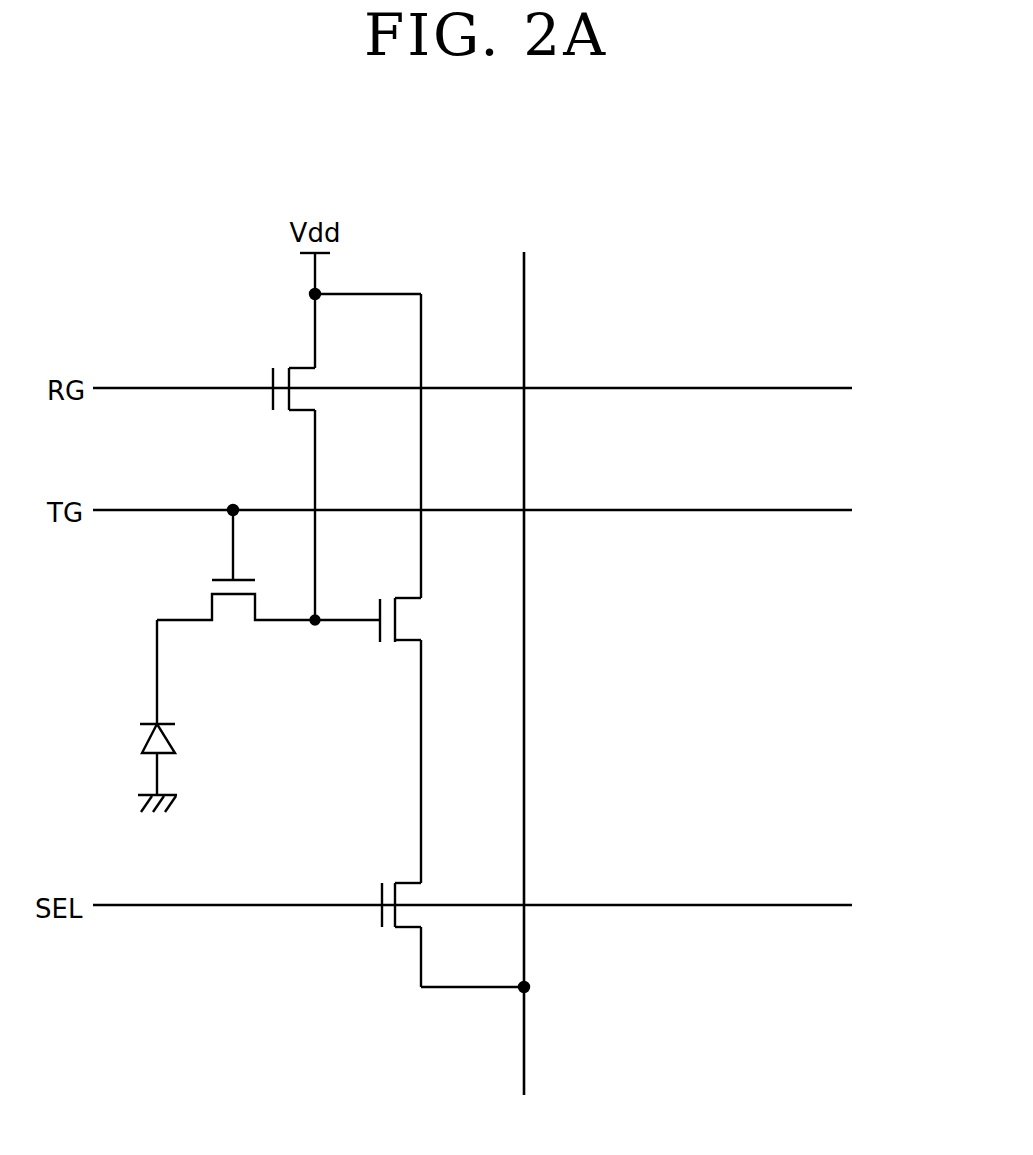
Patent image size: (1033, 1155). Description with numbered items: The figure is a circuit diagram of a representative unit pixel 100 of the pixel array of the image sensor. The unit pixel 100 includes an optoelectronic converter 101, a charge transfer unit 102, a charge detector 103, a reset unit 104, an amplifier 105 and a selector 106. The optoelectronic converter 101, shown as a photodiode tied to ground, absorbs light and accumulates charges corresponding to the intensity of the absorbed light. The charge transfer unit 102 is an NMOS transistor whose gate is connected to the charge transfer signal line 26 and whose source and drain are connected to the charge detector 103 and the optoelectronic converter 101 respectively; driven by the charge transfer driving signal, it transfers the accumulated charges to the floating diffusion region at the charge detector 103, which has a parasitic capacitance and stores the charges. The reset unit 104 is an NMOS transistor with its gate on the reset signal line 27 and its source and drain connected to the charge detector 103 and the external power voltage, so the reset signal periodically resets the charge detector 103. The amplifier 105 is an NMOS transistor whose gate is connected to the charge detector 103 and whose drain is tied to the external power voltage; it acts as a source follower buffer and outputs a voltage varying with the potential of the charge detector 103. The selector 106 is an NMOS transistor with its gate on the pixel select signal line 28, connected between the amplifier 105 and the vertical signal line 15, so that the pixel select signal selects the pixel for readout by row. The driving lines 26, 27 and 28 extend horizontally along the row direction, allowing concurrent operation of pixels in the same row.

The unit pixel 100 is at (633, 210).
The optoelectronic converter 101 is at (170, 739).
The charge transfer unit 102 is at (236, 581).
The charge detector 103 is at (315, 625).
The reset unit 104 is at (324, 383).
The amplifier 105 is at (396, 620).
The selector 106 is at (431, 899).
The vertical signal line 15 is at (524, 743).
The charge transfer signal line 26 is at (578, 510).
The reset signal line 27 is at (578, 388).
The pixel select signal line 28 is at (578, 905).